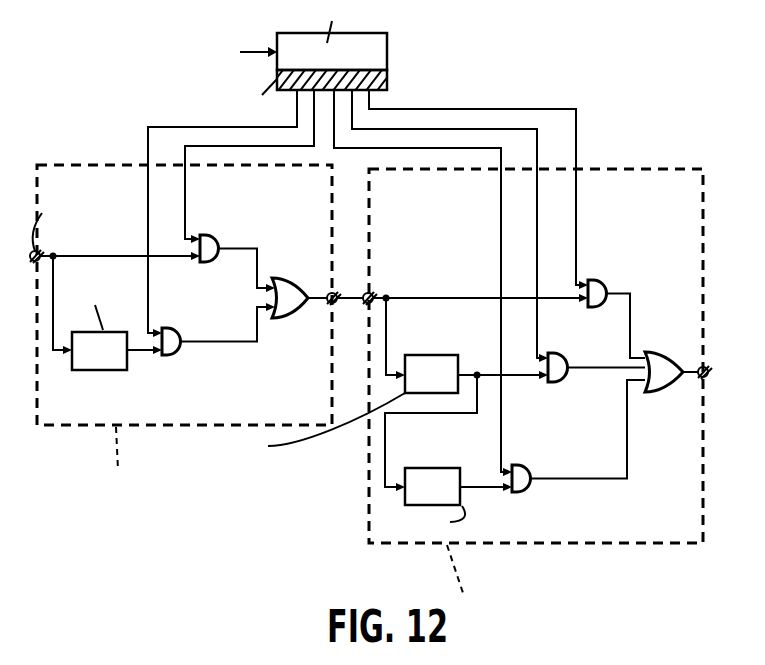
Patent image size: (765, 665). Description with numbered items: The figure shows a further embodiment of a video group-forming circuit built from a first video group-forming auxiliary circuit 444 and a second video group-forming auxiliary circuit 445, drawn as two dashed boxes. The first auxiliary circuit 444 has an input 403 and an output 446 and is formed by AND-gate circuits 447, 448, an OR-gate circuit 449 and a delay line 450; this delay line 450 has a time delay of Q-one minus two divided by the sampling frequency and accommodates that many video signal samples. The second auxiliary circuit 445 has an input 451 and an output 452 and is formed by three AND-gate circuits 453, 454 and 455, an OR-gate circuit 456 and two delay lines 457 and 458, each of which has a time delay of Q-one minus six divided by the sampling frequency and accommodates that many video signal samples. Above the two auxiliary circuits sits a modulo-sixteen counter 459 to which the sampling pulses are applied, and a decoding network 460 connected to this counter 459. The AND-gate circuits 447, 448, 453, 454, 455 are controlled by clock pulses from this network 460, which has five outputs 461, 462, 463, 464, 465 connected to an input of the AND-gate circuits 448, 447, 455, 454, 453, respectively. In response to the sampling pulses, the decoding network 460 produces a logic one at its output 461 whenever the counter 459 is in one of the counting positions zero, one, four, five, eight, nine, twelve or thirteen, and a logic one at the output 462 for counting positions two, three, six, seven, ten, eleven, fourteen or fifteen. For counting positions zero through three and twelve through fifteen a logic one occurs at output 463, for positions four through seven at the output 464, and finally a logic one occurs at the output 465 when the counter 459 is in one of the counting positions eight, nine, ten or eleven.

The modulo-16 counter 459 is at (389, 54).
The decoding network 460 is at (389, 83).
The input 403 is at (40, 252).
The output of decoding network 461 is at (147, 241).
The output of decoding network 462 is at (185, 191).
The output of decoding network 463 is at (500, 257).
The output of decoding network 464 is at (536, 258).
The output of decoding network 465 is at (575, 257).
The first video group-forming auxiliary circuit 444 is at (153, 428).
The second video group-forming auxiliary circuit 445 is at (505, 545).
The output 446 is at (330, 292).
The input 451 is at (372, 292).
The AND-gate circuit 447 is at (210, 265).
The AND-gate circuit 448 is at (176, 357).
The OR-gate circuit 449 is at (295, 319).
The delay line 450 is at (100, 371).
The output 452 is at (700, 366).
The AND-gate circuit 453 is at (601, 308).
The AND-gate circuit 454 is at (552, 384).
The AND-gate circuit 455 is at (527, 465).
The OR-gate circuit 456 is at (672, 391).
The delay line 457 is at (446, 340).
The delay line 458 is at (445, 452).